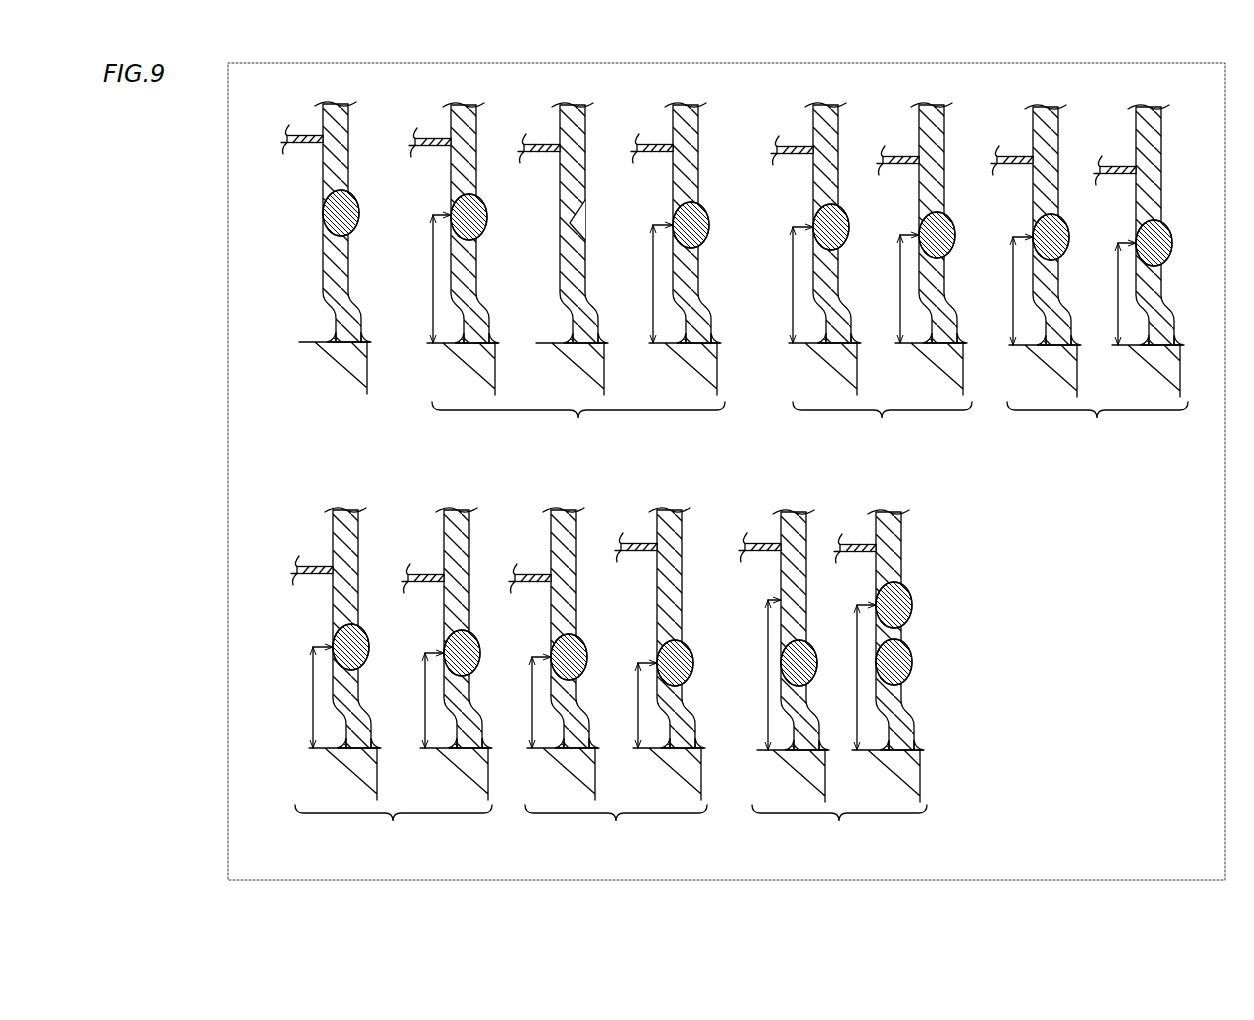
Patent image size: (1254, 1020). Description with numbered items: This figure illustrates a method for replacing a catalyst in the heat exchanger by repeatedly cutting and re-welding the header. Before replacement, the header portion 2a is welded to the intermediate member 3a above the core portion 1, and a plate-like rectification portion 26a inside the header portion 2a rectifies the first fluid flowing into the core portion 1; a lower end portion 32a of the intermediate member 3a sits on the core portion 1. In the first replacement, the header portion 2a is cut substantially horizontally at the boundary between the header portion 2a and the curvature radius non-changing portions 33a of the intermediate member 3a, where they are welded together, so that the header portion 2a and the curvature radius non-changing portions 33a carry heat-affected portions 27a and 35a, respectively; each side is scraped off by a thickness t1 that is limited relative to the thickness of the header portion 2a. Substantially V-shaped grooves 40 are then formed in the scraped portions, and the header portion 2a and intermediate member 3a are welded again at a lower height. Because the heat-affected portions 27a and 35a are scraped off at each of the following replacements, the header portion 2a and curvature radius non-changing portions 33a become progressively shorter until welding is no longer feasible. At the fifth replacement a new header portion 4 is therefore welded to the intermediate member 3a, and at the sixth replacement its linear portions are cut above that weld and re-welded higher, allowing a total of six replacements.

The core portion 1 is at (372, 366).
The header portion 2a is at (734, 474).
The intermediate member 3a is at (323, 272).
The new header portion 4 is at (745, 679).
The rectification portion 26a is at (306, 134).
The heat-affected portion 27a is at (750, 474).
The lower end portion 32a is at (357, 330).
The curvature radius non-changing portion 33a is at (734, 474).
The heat-affected portion 35a is at (750, 474).
The groove 40 is at (578, 222).
The thickness t1 is at (472, 187).